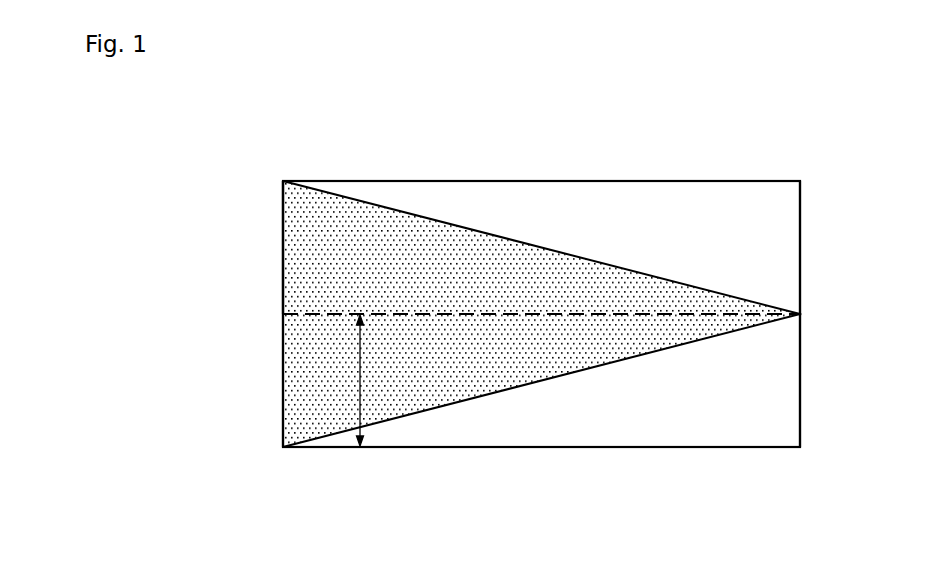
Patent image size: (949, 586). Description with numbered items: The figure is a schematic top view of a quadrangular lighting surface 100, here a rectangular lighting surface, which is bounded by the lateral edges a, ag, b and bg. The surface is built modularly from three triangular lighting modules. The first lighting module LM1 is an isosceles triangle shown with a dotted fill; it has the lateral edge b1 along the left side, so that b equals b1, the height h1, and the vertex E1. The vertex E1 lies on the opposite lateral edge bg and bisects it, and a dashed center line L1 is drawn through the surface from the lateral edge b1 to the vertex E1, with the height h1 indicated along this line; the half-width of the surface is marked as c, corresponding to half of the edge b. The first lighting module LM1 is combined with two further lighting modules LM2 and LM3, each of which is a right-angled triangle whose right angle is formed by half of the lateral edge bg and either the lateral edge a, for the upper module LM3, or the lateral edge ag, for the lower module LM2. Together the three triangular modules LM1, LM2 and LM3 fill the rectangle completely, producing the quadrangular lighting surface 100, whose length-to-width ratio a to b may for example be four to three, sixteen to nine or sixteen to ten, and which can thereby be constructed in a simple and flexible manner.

The quadrangular lighting surface 100 is at (874, 147).
The first lighting module LM1 is at (330, 369).
The second lighting module LM2 is at (760, 371).
The third lighting module LM3 is at (610, 217).
The center line L1 is at (274, 316).
The height h1 is at (378, 314).
The half height c=b/2 c is at (397, 380).
The lateral edge a is at (483, 181).
The lateral edge ag is at (502, 448).
The lateral edge b is at (282, 288).
The lateral edge b1 is at (278, 232).
The lateral edge bg is at (801, 303).
The vertex E1 is at (807, 326).